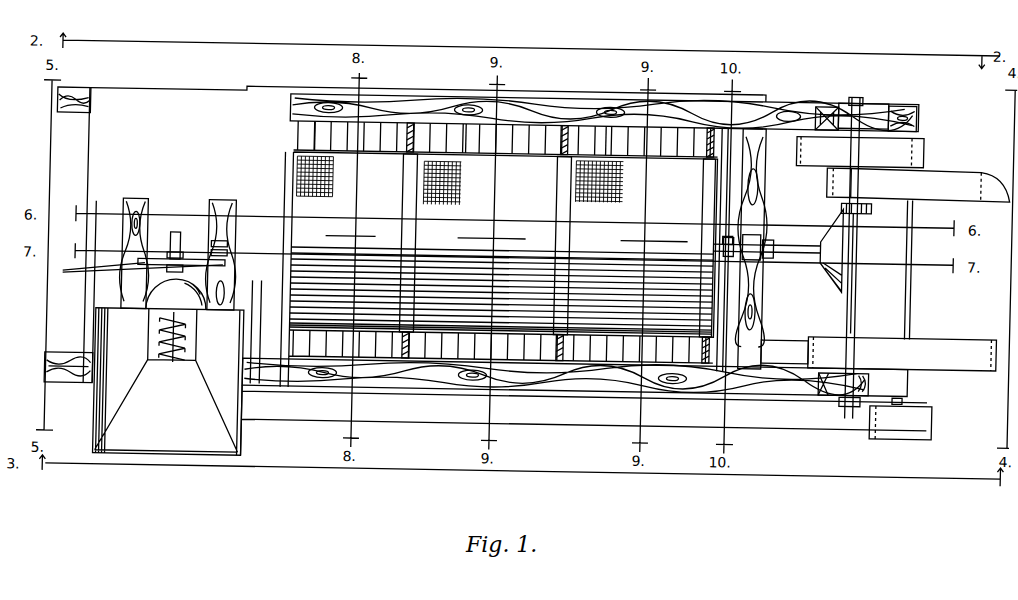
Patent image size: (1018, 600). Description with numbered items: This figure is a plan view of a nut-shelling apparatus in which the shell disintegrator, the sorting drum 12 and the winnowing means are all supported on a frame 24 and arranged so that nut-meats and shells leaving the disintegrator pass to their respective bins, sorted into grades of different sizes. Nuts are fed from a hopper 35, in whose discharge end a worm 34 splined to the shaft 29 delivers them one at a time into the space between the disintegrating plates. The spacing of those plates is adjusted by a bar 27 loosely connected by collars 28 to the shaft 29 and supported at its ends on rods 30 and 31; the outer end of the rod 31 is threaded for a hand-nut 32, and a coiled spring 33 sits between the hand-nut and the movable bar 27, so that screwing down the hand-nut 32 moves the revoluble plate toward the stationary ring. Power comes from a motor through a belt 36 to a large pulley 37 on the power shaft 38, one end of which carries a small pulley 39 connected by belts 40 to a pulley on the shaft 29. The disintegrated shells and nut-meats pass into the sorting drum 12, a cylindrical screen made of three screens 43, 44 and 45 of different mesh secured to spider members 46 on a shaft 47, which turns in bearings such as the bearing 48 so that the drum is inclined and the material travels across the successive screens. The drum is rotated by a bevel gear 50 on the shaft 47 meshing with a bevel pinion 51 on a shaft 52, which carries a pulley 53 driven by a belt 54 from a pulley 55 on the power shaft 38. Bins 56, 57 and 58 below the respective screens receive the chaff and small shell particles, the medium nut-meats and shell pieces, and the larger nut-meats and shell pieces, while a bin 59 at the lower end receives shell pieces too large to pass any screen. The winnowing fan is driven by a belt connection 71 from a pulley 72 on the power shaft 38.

The sorting drum 12 is at (590, 340).
The frame 24 is at (60, 100).
The bar 27 is at (200, 257).
The collars 28 is at (137, 271).
The shaft 29 is at (178, 228).
The rod 30 is at (102, 293).
The rod 31 is at (242, 291).
The hand-nut 32 is at (224, 241).
The coiled spring 33 is at (224, 250).
The worm 34 is at (186, 360).
The hopper 35 is at (167, 433).
The belt 36 is at (992, 167).
The pulley 37 is at (937, 155).
The power shaft 38 is at (916, 303).
The pulley 39 is at (902, 425).
The belts 40 is at (684, 416).
The screen 43 is at (340, 163).
The screen 44 is at (528, 173).
The screen 45 is at (668, 178).
The spider members 46 is at (412, 167).
The shaft 47 is at (790, 235).
The bearing 48 is at (766, 211).
The bevel gear 50 is at (866, 227).
The bevel pinion 51 is at (875, 196).
The shaft 52 is at (862, 294).
The pulley 53 is at (816, 124).
The belt 54 is at (872, 137).
The pulley 55 is at (903, 92).
The bin 56 is at (317, 137).
The bin 57 is at (468, 137).
The bin 58 is at (608, 137).
The bin 59 is at (723, 140).
The belt connection 71 is at (795, 334).
The pulley 72 is at (935, 326).